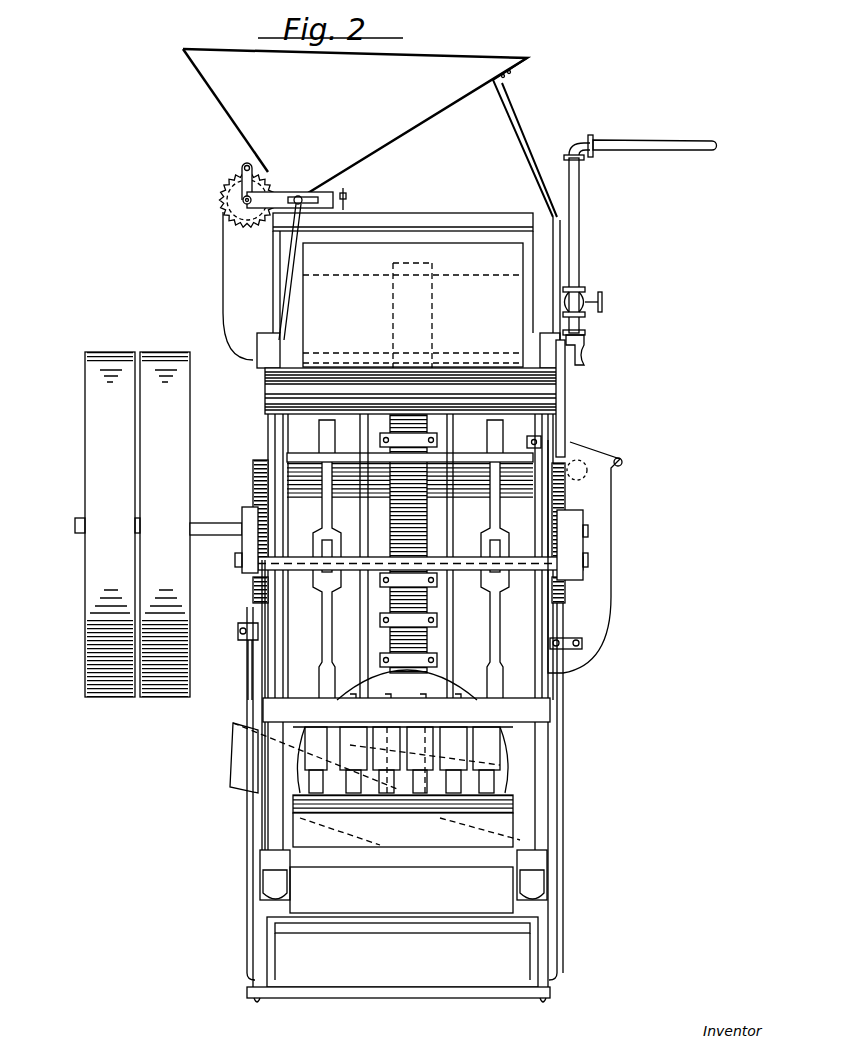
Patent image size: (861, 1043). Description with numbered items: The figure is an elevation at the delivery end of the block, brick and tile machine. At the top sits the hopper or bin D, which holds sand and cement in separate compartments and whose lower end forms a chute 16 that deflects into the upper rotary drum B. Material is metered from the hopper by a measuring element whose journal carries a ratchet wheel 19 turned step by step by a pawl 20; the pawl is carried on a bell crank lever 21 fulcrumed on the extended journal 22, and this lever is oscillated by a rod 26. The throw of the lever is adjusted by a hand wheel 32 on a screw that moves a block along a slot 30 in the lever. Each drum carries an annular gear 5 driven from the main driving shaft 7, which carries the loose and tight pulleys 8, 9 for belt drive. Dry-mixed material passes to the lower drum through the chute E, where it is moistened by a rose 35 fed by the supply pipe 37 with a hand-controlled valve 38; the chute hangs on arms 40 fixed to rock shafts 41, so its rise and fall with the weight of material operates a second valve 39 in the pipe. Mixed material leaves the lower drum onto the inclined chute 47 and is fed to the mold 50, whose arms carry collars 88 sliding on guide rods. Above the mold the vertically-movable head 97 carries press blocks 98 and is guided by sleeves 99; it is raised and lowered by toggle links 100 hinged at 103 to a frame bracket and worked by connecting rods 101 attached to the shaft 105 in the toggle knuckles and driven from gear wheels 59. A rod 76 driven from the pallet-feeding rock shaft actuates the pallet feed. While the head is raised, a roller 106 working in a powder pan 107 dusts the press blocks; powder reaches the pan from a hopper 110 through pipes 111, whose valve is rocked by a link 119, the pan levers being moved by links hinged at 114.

The hopper or bin D is at (370, 133).
The rotary drum B is at (533, 288).
The chute E is at (600, 583).
The annular gear 5 is at (432, 265).
The main driving shaft 7 is at (205, 535).
The loose pulley 8 is at (162, 524).
The tight pulley 9 is at (105, 524).
The chute 16 is at (222, 260).
The ratchet wheel 19 is at (222, 206).
The pawl 20 is at (262, 166).
The bell crank lever 21 is at (290, 182).
The extended journal 22 is at (247, 227).
The rod 26 is at (284, 277).
The slot 30 is at (345, 196).
The hand wheel 32 is at (360, 194).
The rose or spraying device 35 is at (587, 474).
The supply pipe 37 is at (566, 420).
The hand-controlled valve 38 is at (580, 310).
The valve 39 is at (585, 352).
The links or arms 40 is at (575, 628).
The rock shaft 41 is at (556, 653).
The inclined chute 47 is at (240, 792).
The mold 50 is at (401, 890).
The gear wheel 59 is at (255, 488).
The rod 76 is at (245, 905).
The collar 88 is at (262, 858).
The vertically-movable head 97 is at (407, 698).
The press block 98 is at (403, 760).
The sleeve 99 is at (270, 702).
The toggle links 100 is at (408, 560).
The connecting rod 101 is at (240, 547).
The hinge connection 103 is at (430, 444).
The shaft 105 is at (360, 570).
The roller 106 is at (513, 808).
The powder-carrying can or pan 107 is at (406, 830).
The hopper 110 is at (413, 305).
The pipe 111 is at (428, 556).
The hinge connection 114 is at (524, 445).
The link 119 is at (262, 388).